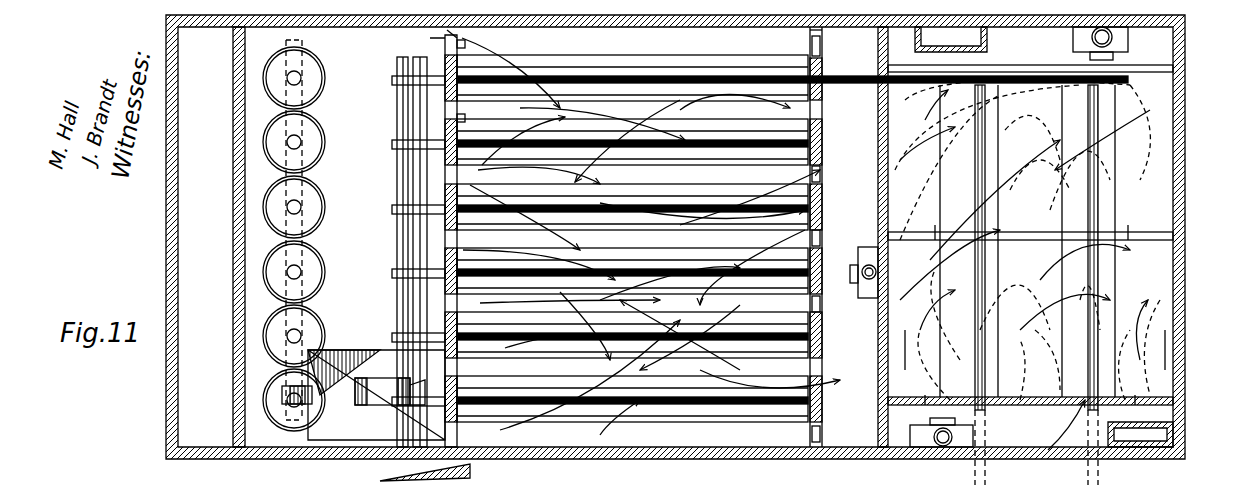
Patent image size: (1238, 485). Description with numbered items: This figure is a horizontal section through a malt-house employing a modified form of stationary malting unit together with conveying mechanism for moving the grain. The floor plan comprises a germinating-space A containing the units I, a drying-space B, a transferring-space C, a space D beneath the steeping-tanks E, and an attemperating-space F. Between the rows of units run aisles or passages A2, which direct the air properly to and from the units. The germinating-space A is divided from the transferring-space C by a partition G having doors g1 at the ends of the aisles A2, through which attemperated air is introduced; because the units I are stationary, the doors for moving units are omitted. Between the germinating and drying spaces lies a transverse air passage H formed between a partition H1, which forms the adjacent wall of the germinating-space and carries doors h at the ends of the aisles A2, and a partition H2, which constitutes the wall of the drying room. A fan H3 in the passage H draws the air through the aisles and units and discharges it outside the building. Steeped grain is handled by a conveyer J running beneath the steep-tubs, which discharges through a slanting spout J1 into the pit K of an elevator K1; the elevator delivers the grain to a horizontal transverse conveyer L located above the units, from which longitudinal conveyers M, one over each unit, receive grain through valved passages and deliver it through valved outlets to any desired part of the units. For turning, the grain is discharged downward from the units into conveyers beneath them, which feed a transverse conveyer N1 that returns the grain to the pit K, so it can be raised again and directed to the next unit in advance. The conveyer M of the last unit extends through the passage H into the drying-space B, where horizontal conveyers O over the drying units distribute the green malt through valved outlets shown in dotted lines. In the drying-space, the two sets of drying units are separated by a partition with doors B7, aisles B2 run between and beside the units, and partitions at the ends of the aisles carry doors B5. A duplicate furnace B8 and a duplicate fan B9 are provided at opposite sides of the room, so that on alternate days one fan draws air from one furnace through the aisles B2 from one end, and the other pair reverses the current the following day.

The germinating-space A is at (768, 447).
The steam pipe A2 is at (792, 143).
The drying-space B is at (1173, 302).
The aisles B2 is at (1027, 285).
The doors B5 is at (1030, 234).
The doors B7 is at (1140, 232).
The furnace B8 is at (1044, 238).
The fan B9 is at (925, 460).
The transferring-space C is at (378, 460).
The space beneath steeping-tanks D is at (280, 447).
The steeping-tanks E is at (270, 152).
The attemperating-space F is at (212, 447).
The partition G is at (445, 40).
The doors g1 is at (478, 117).
The transverse passage H is at (845, 51).
The transverse partition H1 is at (810, 32).
The transverse partition H2 is at (859, 124).
The fan H3 is at (862, 298).
The doors h is at (822, 173).
The units I is at (1050, 150).
The conveyer J is at (302, 48).
The slanting spout J1 is at (327, 368).
The pit K is at (376, 395).
The elevator K1 is at (368, 375).
The horizontal transverse conveyer L is at (405, 237).
The conveyers M is at (562, 428).
The transverse conveyer N1 is at (412, 125).
The horizontal conveyers O is at (1133, 325).